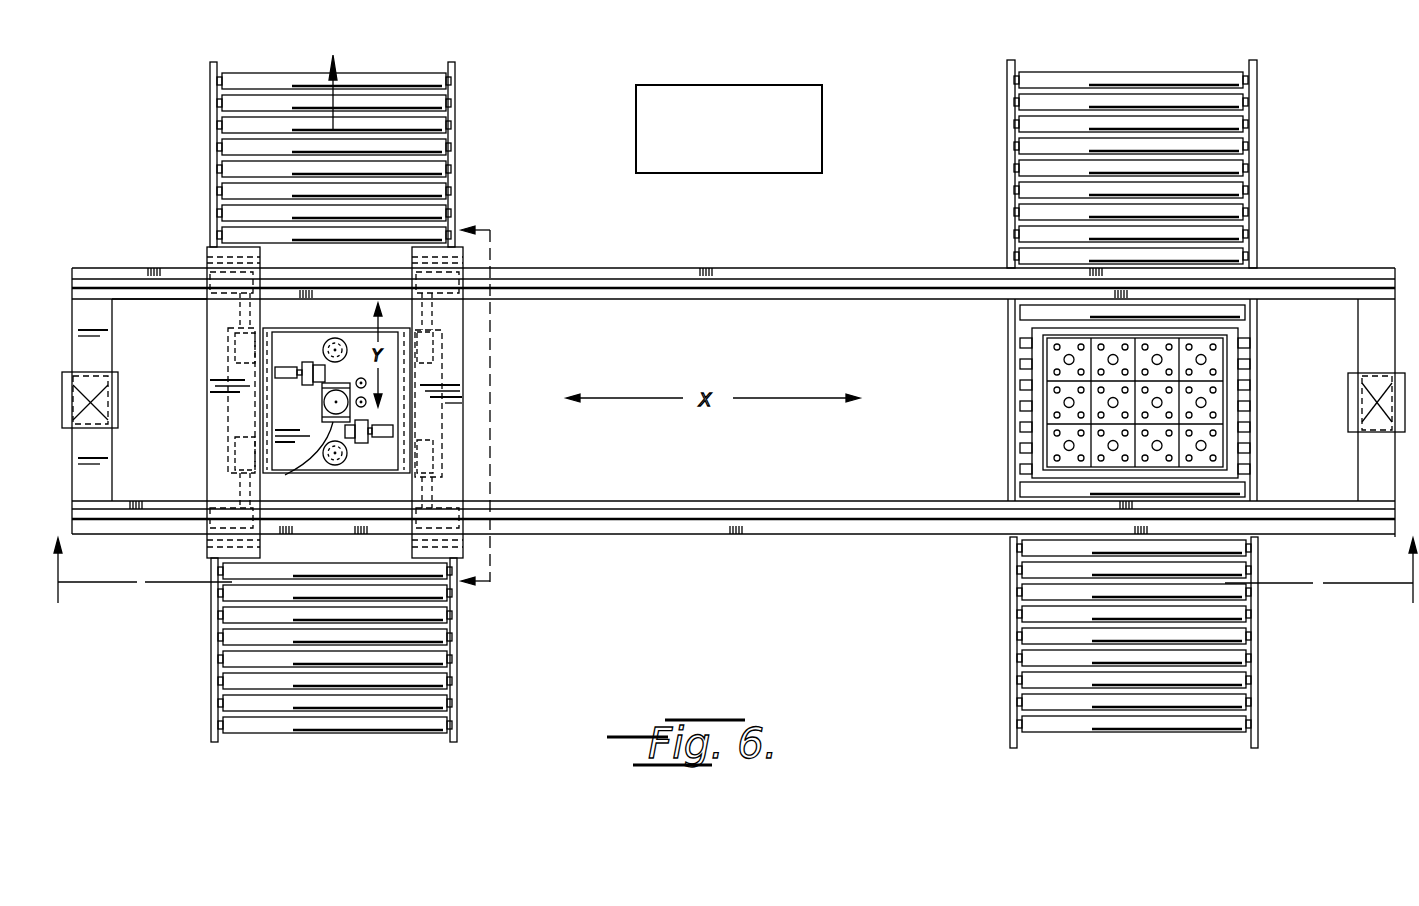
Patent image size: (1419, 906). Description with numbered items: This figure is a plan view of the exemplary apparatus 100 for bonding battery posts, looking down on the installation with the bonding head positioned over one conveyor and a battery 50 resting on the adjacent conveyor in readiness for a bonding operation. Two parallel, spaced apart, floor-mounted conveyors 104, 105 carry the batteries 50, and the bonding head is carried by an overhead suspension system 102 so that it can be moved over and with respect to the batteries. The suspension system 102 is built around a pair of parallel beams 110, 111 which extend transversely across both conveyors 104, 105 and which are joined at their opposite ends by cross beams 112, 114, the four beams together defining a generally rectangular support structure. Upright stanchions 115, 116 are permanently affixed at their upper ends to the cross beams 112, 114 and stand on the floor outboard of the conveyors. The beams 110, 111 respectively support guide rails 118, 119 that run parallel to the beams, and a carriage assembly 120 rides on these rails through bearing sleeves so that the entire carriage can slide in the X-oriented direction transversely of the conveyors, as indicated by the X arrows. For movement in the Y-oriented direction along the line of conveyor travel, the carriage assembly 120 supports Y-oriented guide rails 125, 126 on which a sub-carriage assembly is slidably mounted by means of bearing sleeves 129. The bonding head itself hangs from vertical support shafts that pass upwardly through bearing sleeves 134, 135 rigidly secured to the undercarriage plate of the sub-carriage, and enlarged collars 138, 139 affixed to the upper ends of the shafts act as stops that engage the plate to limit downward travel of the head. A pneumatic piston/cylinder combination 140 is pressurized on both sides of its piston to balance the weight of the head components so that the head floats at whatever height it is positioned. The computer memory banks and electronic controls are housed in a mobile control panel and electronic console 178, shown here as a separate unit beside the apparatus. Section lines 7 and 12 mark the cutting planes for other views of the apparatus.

The exemplary apparatus 100 is at (417, 736).
The overhead suspension system 102 is at (1270, 260).
The conveyor 104 is at (440, 677).
The conveyor 105 is at (1027, 662).
The beam 110 is at (177, 478).
The beam 111 is at (177, 300).
The cross beam 112 is at (112, 473).
The cross beam 114 is at (1363, 473).
The upright stanchion 115 is at (118, 405).
The upright stanchion 116 is at (1348, 415).
The guide rail 118 is at (667, 467).
The guide rail 119 is at (812, 238).
The carriage assembly 120 is at (304, 418).
The Y-oriented guide rail 125 is at (263, 310).
The Y-oriented guide rail 126 is at (427, 317).
The bearing sleeves 129 is at (237, 355).
The bearing sleeve 134 is at (350, 460).
The bearing sleeve 135 is at (355, 323).
The enlarged collar 138 is at (335, 465).
The enlarged collar 139 is at (323, 348).
The piston/cylinder combination 140 is at (301, 462).
The mobile control panel and electronic console 178 is at (703, 165).
The battery 50 is at (1228, 392).
The section line 12 is at (501, 409).
The section line 7 is at (733, 590).